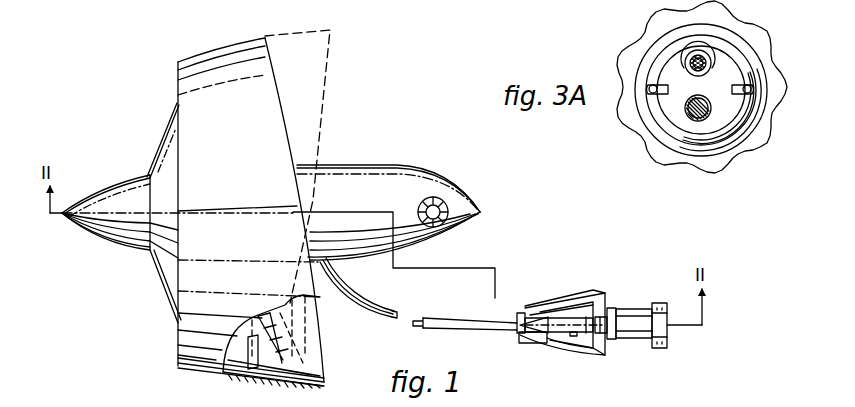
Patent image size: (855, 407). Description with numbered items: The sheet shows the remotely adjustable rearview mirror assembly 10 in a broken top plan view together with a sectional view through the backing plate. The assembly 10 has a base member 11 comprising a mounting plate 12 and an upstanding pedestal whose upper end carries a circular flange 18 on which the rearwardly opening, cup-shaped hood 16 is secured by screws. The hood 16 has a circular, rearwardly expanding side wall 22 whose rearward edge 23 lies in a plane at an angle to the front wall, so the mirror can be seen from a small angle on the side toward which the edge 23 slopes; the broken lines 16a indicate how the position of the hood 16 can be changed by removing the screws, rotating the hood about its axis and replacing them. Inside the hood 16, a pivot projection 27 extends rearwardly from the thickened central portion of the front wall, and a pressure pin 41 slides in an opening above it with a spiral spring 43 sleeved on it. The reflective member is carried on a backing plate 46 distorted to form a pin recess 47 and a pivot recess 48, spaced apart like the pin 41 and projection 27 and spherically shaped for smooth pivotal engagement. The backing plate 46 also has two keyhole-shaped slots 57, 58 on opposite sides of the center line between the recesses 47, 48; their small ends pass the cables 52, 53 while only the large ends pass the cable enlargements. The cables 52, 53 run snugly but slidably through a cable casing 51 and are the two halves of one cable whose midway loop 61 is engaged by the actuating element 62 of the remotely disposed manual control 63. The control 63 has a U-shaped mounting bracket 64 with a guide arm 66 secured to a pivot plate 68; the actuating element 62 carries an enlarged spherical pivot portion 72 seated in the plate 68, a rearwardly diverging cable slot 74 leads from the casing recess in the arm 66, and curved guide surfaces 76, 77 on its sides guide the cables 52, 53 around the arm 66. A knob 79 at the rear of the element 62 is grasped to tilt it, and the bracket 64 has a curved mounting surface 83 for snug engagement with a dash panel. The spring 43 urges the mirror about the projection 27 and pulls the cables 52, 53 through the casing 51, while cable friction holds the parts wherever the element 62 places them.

In FIG. 1, the rearview mirror assembly 10 is at (136, 162).
In FIG. 1, the base member 11 is at (350, 163).
In FIG. 1, the mounting plate 12 is at (392, 181).
In FIG. 1, the hood 16 is at (176, 343).
In FIG. 1, the broken lines 16a is at (337, 51).
In FIG. 1, the circular flange 18 is at (170, 264).
In FIG. 1, the side wall 22 is at (307, 386).
In FIG. 1, the rearward edge 23 is at (324, 343).
In FIG. 3A, the pivot projection 27 is at (702, 120).
In FIG. 3A, the pressure pin 41 is at (697, 55).
In FIG. 3A, the spiral spring 43 is at (700, 52).
In FIG. 3A, the backing plate 46 is at (772, 92).
In FIG. 3A, the pin recess 47 is at (705, 56).
In FIG. 3A, the pivot recess 48 is at (692, 118).
In FIG. 1, the cable casing 51 is at (460, 318).
In FIG. 1, the cable 52 is at (552, 337).
In FIG. 3A, the cable 52 is at (660, 100).
In FIG. 1, the cable 53 is at (541, 320).
In FIG. 3A, the cable 53 is at (740, 98).
In FIG. 3A, the keyhole-shaped slot 57 is at (655, 86).
In FIG. 3A, the keyhole-shaped slot 58 is at (748, 84).
In FIG. 1, the loop 61 is at (589, 316).
In FIG. 1, the actuating element 62 is at (631, 307).
In FIG. 1, the manual control 63 is at (597, 366).
In FIG. 1, the mounting bracket 64 is at (581, 296).
In FIG. 1, the guide arm 66 is at (573, 332).
In FIG. 1, the pivot plate 68 is at (608, 355).
In FIG. 1, the pivot portion 72 is at (610, 311).
In FIG. 1, the cable slot 74 is at (522, 314).
In FIG. 1, the guide surface 76 is at (578, 315).
In FIG. 1, the guide surface 77 is at (577, 338).
In FIG. 1, the knob 79 is at (667, 340).
In FIG. 1, the mounting surface 83 is at (560, 350).